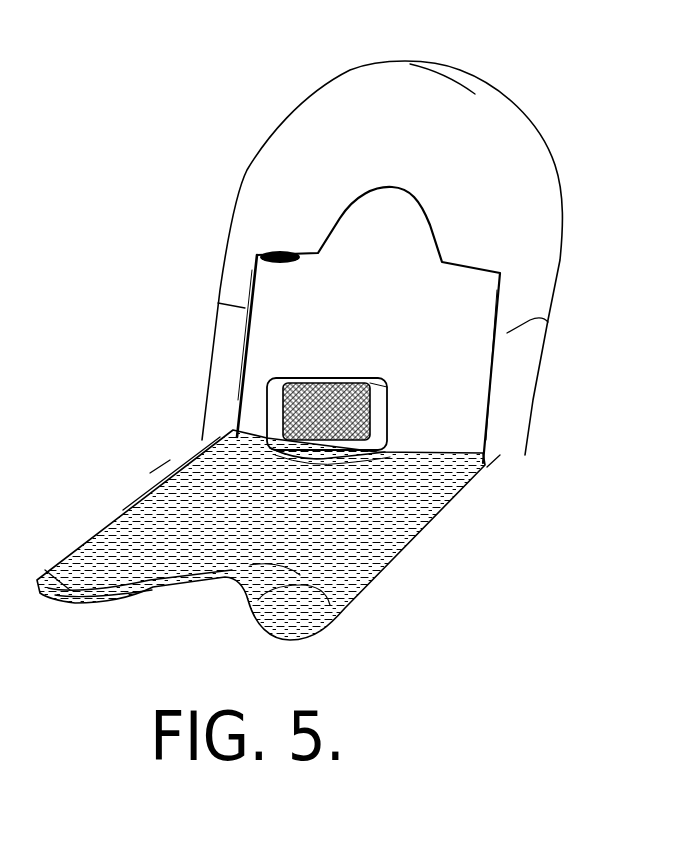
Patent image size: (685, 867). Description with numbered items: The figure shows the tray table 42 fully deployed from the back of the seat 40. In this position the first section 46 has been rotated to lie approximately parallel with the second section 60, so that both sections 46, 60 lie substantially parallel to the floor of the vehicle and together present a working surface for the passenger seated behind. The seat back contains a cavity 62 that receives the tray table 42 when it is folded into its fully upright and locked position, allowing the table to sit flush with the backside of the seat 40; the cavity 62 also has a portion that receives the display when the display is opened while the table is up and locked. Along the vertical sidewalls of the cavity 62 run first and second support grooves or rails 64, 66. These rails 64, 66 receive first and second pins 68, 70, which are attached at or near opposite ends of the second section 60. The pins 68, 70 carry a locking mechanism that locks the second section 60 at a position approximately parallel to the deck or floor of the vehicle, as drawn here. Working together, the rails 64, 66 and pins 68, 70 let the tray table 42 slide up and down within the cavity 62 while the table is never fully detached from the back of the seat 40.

The seat 40 is at (475, 72).
The tray table 42 is at (407, 547).
The first section 46 is at (63, 553).
The second section 60 is at (157, 477).
The cavity 62 is at (505, 263).
The first support rail 64 is at (218, 303).
The second support rail 66 is at (548, 322).
The first pin 68 is at (237, 433).
The second pin 70 is at (487, 467).